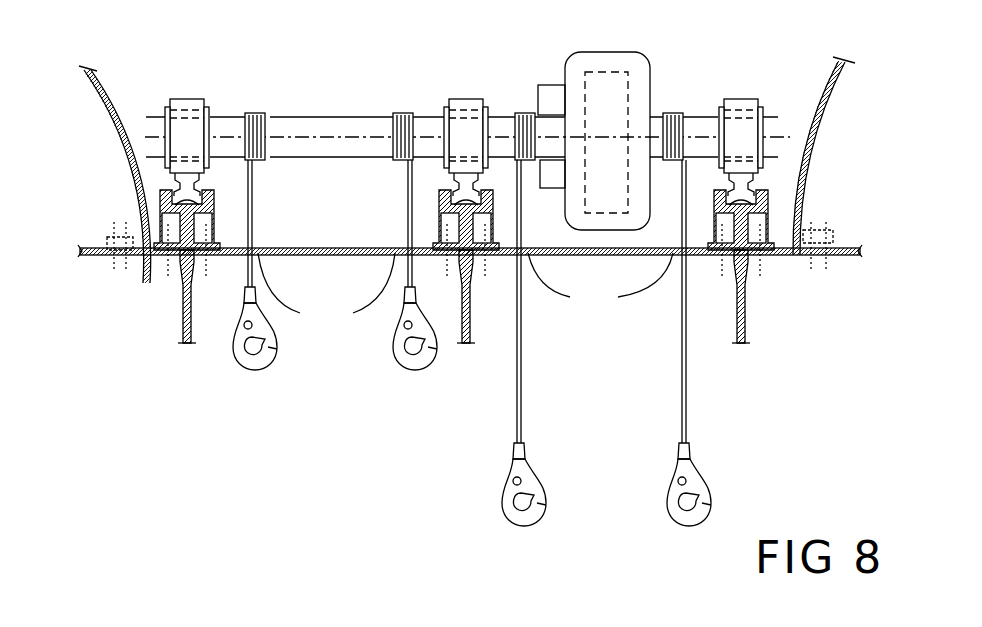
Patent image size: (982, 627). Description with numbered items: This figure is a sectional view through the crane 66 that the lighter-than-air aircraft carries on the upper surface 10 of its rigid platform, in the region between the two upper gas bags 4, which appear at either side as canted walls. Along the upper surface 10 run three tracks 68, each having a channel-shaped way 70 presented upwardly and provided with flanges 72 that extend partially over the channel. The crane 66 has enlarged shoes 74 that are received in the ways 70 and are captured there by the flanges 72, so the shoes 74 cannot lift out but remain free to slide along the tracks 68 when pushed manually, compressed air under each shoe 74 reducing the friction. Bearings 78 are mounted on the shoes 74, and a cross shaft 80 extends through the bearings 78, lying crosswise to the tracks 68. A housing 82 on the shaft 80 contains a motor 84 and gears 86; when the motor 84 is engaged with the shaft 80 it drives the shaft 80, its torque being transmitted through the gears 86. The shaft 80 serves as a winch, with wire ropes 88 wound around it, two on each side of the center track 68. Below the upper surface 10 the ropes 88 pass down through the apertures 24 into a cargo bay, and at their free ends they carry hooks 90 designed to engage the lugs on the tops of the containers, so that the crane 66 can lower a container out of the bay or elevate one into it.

The upper gas bags 4 is at (102, 88).
The upper surface 10 is at (378, 257).
The apertures 24 is at (465, 294).
The crane 66 is at (278, 100).
The tracks 68 is at (178, 222).
The channel-shaped way 70 is at (170, 207).
The flanges 72 is at (210, 192).
The shoes 74 is at (190, 190).
The bearings 78 is at (190, 112).
The cross shafts 80 is at (303, 117).
The housing 82 is at (638, 53).
The motor 84 is at (552, 97).
The gears 86 is at (610, 90).
The wire ropes 88 is at (253, 232).
The hooks 90 is at (400, 365).